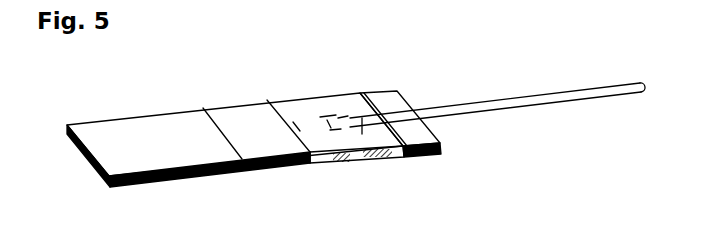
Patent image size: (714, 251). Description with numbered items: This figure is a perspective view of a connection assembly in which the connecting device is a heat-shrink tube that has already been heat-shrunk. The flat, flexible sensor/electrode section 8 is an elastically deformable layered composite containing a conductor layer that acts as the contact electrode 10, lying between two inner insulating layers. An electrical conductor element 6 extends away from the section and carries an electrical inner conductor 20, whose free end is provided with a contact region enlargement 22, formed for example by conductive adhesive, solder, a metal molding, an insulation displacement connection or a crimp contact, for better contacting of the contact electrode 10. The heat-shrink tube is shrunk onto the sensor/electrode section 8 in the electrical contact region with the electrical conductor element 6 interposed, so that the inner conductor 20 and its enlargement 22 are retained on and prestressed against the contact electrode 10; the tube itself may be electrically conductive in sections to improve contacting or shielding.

The sensor/electrode section 8 is at (101, 129).
The contact electrode 10 is at (347, 163).
The electrical inner conductor 20 is at (353, 113).
The contact region enlargement 22 is at (336, 116).
The electrical conductor element 6 is at (520, 98).